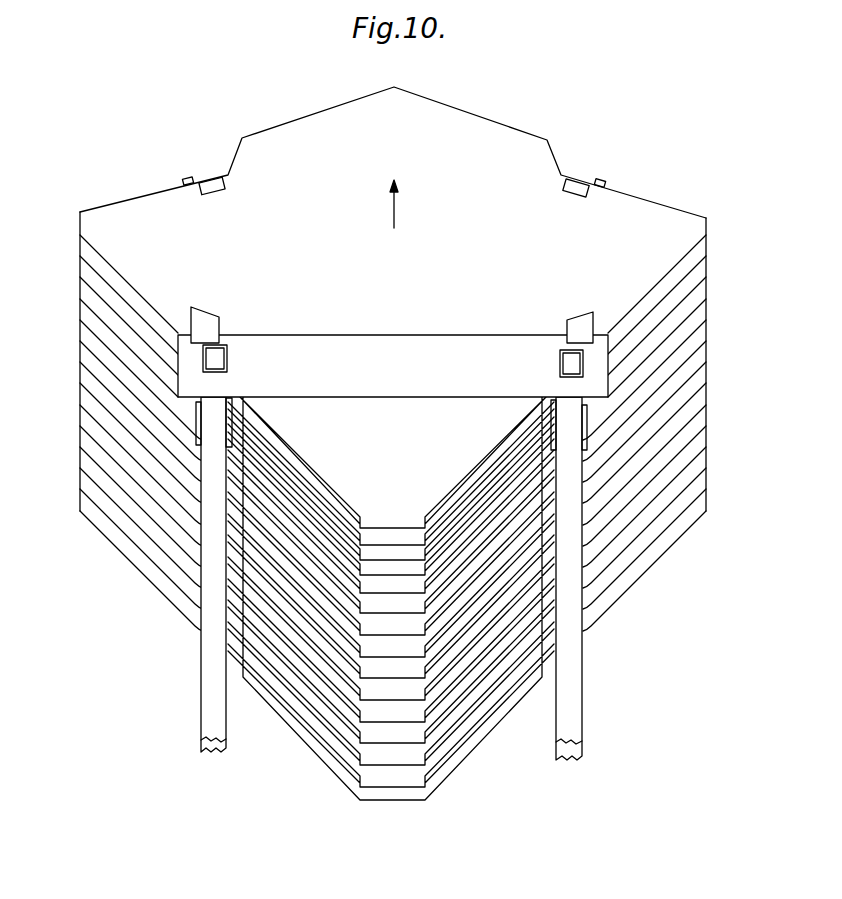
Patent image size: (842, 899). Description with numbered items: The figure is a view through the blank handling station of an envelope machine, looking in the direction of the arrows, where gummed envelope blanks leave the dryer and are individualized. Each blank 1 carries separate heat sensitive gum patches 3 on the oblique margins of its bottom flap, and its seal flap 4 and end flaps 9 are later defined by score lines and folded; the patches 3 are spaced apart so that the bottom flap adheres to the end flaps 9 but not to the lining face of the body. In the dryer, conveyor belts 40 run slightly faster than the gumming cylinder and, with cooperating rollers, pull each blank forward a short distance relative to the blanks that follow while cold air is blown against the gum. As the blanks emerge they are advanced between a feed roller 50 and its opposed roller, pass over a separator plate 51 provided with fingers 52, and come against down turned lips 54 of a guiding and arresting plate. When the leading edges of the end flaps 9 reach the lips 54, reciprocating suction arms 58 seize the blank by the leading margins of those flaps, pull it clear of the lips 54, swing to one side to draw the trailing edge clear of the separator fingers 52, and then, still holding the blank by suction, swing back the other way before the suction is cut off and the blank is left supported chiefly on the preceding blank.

The blank 1 is at (383, 398).
The heat sensitive gum patches 3 is at (425, 516).
The seal flap 4 is at (481, 124).
The end flaps 9 is at (87, 267).
The conveyor belts 40 is at (205, 735).
The feed roller 50 is at (227, 357).
The separator plate 51 is at (373, 338).
The fingers 52 is at (203, 318).
The down turned lips 54 is at (184, 178).
The reciprocating suction arms 58 is at (212, 182).